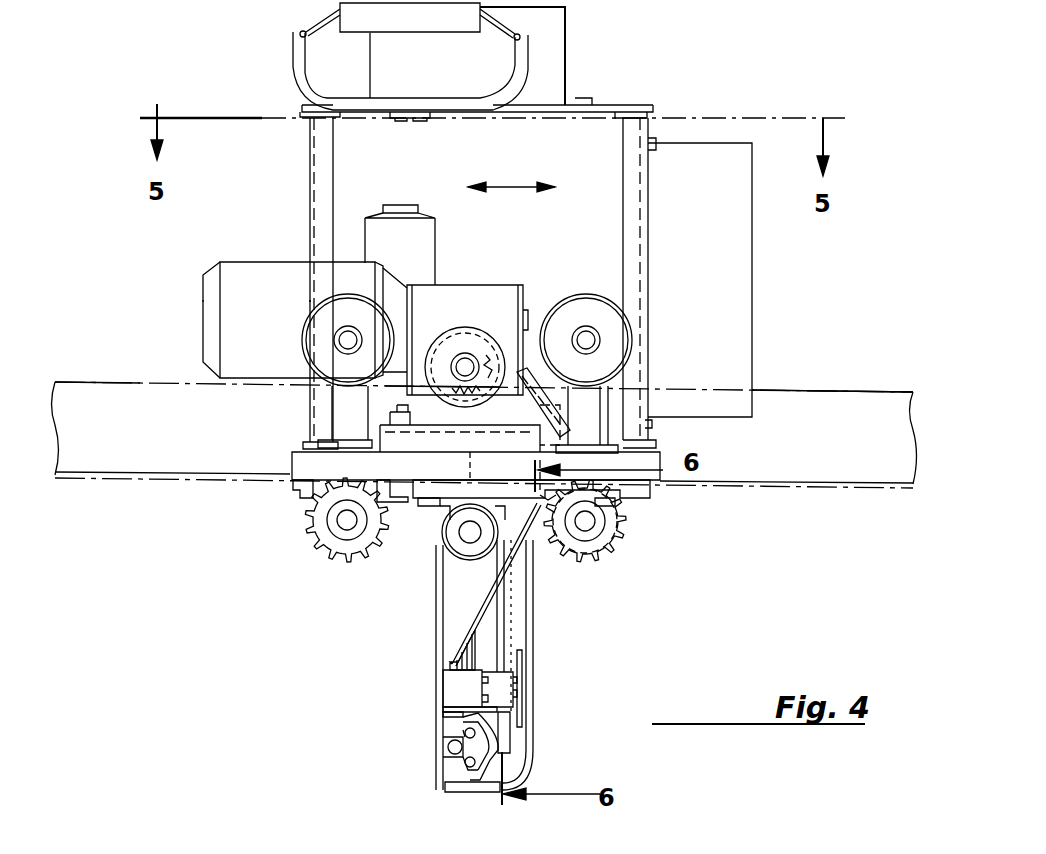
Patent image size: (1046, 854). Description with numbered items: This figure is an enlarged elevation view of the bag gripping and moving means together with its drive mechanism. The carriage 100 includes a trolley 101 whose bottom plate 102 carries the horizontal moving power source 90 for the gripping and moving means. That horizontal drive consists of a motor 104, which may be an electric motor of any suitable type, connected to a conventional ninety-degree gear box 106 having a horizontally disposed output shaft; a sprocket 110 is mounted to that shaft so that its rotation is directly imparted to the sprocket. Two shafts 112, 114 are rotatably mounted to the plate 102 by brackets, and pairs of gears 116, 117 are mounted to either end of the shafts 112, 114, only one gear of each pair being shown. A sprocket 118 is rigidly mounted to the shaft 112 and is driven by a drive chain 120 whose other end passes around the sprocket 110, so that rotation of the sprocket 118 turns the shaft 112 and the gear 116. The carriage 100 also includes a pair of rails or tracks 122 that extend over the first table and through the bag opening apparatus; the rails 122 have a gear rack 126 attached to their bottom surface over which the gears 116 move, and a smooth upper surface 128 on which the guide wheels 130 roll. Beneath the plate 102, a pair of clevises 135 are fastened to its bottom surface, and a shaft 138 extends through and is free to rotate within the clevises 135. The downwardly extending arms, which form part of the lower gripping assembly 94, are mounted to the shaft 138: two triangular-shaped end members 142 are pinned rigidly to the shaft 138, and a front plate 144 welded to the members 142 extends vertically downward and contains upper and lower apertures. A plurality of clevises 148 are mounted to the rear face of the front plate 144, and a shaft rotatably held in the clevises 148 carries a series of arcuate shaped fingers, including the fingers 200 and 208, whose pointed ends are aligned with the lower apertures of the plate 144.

The horizontal moving power source 90 is at (149, 267).
The blade assembly 94 is at (591, 672).
The carriage 100 is at (269, 229).
The trolley 101 is at (487, 374).
The bottom plate 102 is at (436, 472).
The motor 104 is at (262, 320).
The gear box 106 is at (425, 252).
The sprocket 110 is at (429, 368).
The shaft 112 is at (592, 546).
The shaft 114 is at (314, 526).
The gear 116 is at (616, 540).
The gear 117 is at (258, 520).
The sprocket 118 is at (622, 519).
The drive chain 120 is at (618, 391).
The rails or tracks 122 is at (484, 407).
The gear rack 126 is at (484, 517).
The smooth upper surface 128 is at (839, 361).
The guide wheel 130 is at (433, 193).
The clevis 135 is at (427, 552).
The shaft 138 is at (513, 554).
The triangular-shaped end member 142 is at (446, 586).
The front plate 144 is at (432, 665).
The clevis 148 is at (422, 746).
The arcuate shaped finger 200 is at (435, 730).
The arcuate shaped finger 208 is at (435, 793).